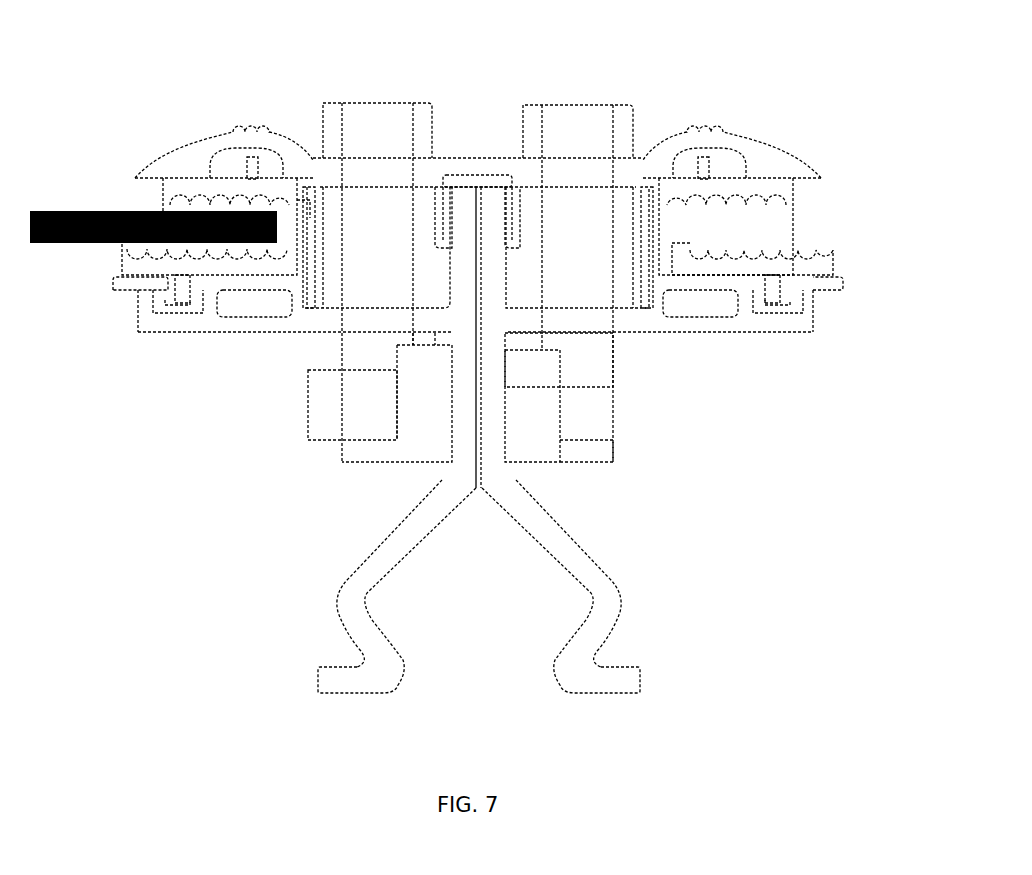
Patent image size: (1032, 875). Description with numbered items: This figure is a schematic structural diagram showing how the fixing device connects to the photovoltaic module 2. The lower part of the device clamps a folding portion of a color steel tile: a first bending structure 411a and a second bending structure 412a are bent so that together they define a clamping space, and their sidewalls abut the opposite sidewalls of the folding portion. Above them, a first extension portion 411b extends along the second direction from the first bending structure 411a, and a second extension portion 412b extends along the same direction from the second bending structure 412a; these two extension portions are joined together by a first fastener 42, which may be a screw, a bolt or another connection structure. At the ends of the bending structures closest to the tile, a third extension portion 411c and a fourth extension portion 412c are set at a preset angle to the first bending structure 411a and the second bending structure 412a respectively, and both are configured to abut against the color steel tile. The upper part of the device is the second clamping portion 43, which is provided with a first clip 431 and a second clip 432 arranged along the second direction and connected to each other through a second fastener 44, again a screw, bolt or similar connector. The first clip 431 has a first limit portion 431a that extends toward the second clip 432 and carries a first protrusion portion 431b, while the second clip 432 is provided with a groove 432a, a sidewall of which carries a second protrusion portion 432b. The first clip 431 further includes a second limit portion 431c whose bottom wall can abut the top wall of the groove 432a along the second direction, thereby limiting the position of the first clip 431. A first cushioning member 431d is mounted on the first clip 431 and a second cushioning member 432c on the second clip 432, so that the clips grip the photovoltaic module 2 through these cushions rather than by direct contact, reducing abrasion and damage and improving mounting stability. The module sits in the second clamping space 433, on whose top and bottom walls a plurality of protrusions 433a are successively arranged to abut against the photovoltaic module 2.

The photovoltaic module 2 is at (116, 210).
The first fastener 42 is at (542, 415).
The second clamping portion 43 is at (138, 90).
The second fastener 44 is at (352, 140).
The first bending structure 411a is at (355, 600).
The first extension portion 411b is at (463, 400).
The third extension portion 411c is at (343, 680).
The second bending structure 412a is at (598, 600).
The second extension portion 412b is at (497, 415).
The fourth extension portion 412c is at (602, 680).
The first clip 431 is at (192, 160).
The first limit portion 431a is at (455, 190).
The first protrusion portion 431b is at (445, 250).
The second limit portion 431c is at (472, 170).
The first cushioning member 431d is at (755, 195).
The second clip 432 is at (135, 290).
The groove 432a is at (333, 303).
The second protrusion portion 432b is at (447, 240).
The second cushioning member 432c is at (813, 265).
The second clamping space 433 is at (720, 240).
The protrusions 433a is at (795, 198).